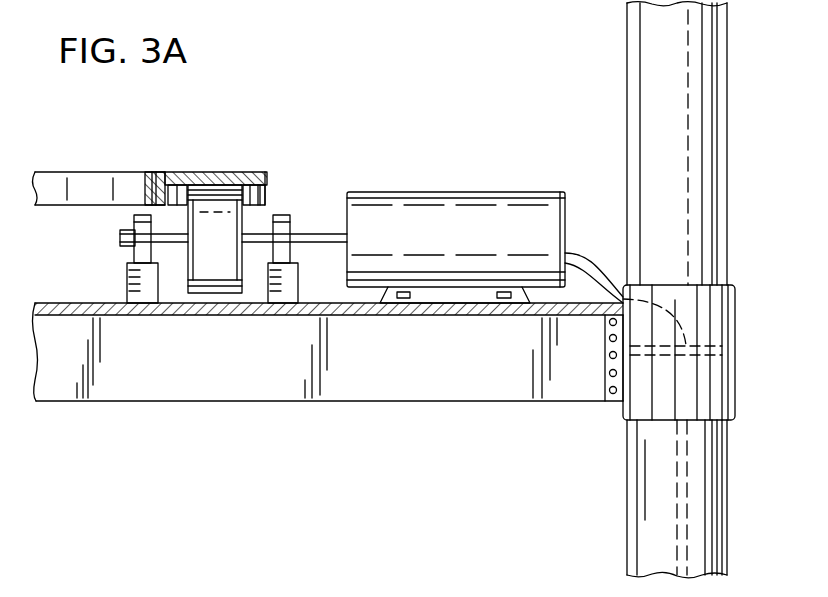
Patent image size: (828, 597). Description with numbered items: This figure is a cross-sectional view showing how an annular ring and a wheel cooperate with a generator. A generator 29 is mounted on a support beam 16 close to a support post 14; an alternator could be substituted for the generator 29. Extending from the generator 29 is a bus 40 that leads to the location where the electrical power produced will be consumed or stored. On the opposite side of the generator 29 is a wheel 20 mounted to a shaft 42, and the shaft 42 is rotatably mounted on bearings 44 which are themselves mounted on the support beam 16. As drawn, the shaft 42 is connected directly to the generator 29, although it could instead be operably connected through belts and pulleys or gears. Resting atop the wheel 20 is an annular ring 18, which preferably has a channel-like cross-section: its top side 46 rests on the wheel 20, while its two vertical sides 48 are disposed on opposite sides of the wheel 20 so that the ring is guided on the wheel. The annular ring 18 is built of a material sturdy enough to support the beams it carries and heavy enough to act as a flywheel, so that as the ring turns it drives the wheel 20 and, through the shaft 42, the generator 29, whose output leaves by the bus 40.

The support post 14 is at (640, 121).
The support beam 16 is at (427, 386).
The annular ring 18 is at (152, 168).
The wheel 20 is at (216, 294).
The generator 29 is at (457, 205).
The bus 40 is at (680, 488).
The shaft 42 is at (257, 230).
The bearings 44 is at (135, 250).
The top side 46 is at (212, 172).
The vertical sides 48 is at (148, 175).